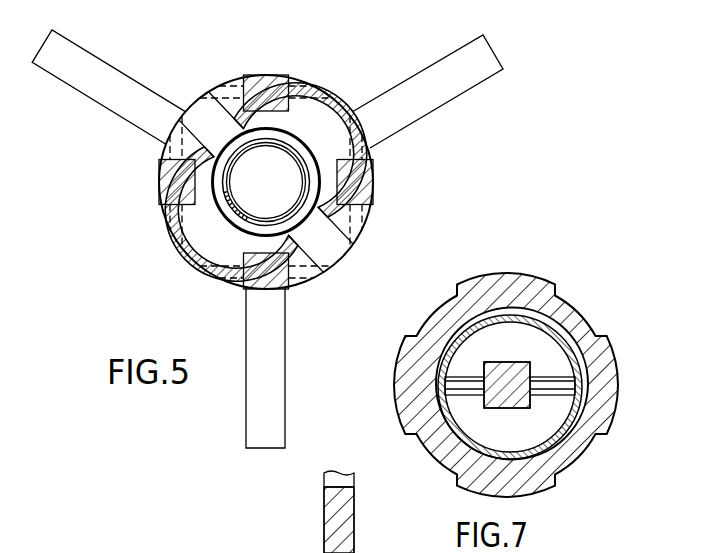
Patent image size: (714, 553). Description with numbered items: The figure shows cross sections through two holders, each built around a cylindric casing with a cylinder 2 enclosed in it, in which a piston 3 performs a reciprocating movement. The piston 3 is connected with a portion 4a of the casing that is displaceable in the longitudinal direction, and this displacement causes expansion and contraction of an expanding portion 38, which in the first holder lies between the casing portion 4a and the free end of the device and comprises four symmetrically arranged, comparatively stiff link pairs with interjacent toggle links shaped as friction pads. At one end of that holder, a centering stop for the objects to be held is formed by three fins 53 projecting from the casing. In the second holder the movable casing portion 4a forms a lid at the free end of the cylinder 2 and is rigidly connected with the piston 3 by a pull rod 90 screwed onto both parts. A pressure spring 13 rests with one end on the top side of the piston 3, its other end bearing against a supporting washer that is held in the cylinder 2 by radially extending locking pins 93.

In FIG. 5, the cylinder 2 is at (298, 115).
In FIG. 7, the cylinder 2 is at (563, 429).
In FIG. 5, the piston 3 is at (212, 218).
In FIG. 5, the casing portion 4a is at (207, 256).
In FIG. 7, the casing portion 4a is at (556, 306).
In FIG. 5, the pressure spring 13 is at (312, 181).
In FIG. 5, the expanding portion 38 is at (259, 64).
In FIG. 5, the fins 53 is at (267, 363).
In FIG. 7, the pull rod 90 is at (505, 380).
In FIG. 7, the locking pins 93 is at (558, 377).